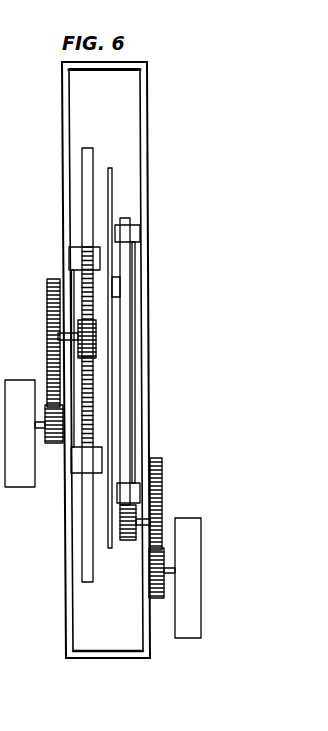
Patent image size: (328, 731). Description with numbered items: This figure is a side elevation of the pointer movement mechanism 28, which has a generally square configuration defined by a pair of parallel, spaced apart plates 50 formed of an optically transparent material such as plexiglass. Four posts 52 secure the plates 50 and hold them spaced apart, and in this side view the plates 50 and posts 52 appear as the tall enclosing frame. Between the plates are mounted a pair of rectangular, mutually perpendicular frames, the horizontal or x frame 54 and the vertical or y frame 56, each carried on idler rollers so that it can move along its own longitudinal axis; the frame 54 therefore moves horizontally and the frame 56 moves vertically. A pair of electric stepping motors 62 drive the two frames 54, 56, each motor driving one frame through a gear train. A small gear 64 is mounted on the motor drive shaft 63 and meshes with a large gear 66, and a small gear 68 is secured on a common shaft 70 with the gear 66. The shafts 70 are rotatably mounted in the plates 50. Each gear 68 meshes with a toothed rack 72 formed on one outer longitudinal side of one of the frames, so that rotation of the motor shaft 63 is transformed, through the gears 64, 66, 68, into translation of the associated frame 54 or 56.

The pointer movement mechanism 28 is at (180, 197).
The plates 50 is at (62, 86).
The posts 52 is at (122, 70).
The horizontal frame 54 is at (128, 349).
The vertical frame 56 is at (87, 528).
The electric stepping motor 62 is at (22, 487).
The motor drive shaft 63 is at (38, 421).
The small gear 64 is at (60, 444).
The large gear 66 is at (47, 334).
The small gear 68 is at (95, 322).
The common shaft 70 is at (72, 333).
The toothed rack 72 is at (84, 268).